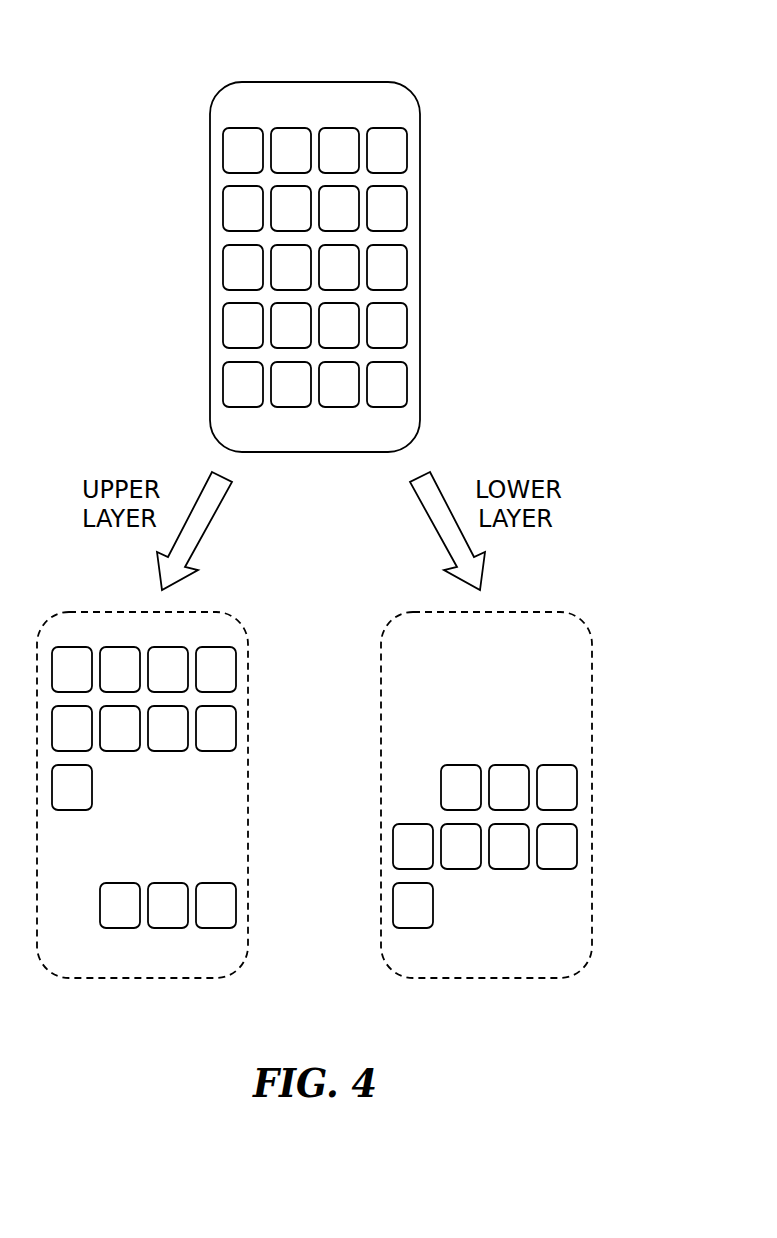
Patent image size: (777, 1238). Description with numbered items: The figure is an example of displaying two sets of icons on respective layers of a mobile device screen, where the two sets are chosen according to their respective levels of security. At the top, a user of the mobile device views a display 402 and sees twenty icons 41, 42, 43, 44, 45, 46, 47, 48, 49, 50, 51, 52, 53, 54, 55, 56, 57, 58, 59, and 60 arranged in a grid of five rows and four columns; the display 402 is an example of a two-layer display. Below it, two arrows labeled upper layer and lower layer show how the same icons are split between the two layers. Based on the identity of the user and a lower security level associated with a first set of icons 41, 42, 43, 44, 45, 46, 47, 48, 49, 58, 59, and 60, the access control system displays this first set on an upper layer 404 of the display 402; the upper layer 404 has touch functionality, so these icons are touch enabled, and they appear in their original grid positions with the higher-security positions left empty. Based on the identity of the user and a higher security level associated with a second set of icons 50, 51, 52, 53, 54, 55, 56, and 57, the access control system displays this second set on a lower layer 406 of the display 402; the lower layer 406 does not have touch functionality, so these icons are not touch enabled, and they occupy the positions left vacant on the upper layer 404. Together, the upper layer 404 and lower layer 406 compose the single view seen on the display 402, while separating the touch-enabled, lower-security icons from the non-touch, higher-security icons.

The display 402 is at (345, 83).
The upper layer 404 is at (223, 610).
The lower layer 406 is at (552, 610).
The icon 41 is at (232, 165).
The icon 42 is at (280, 165).
The icon 43 is at (328, 165).
The icon 44 is at (376, 165).
The icon 45 is at (232, 223).
The icon 46 is at (280, 223).
The icon 47 is at (328, 223).
The icon 48 is at (376, 223).
The icon 49 is at (232, 282).
The icon 50 is at (280, 282).
The icon 51 is at (328, 282).
The icon 52 is at (376, 282).
The icon 53 is at (232, 340).
The icon 54 is at (280, 340).
The icon 55 is at (328, 340).
The icon 56 is at (376, 340).
The icon 57 is at (232, 399).
The icon 58 is at (280, 399).
The icon 59 is at (328, 399).
The icon 60 is at (376, 399).